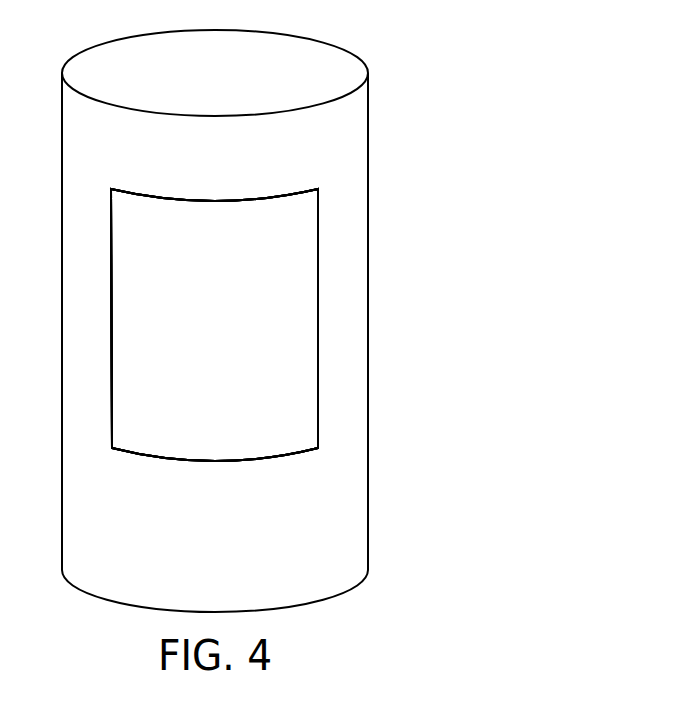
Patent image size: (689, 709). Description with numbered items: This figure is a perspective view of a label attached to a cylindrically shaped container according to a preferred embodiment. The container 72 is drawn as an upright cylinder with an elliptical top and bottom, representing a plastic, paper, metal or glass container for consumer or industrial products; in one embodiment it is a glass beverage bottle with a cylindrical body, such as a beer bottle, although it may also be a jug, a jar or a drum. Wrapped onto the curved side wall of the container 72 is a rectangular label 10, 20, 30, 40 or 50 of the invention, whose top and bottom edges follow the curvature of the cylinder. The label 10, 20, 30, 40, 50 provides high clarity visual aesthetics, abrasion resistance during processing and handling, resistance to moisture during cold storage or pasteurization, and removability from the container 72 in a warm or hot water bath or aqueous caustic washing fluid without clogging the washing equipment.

The container 72 is at (368, 140).
The label 10 is at (318, 288).
The label 20 is at (214, 325).
The label 30 is at (214, 325).
The label 40 is at (214, 325).
The label 50 is at (214, 325).